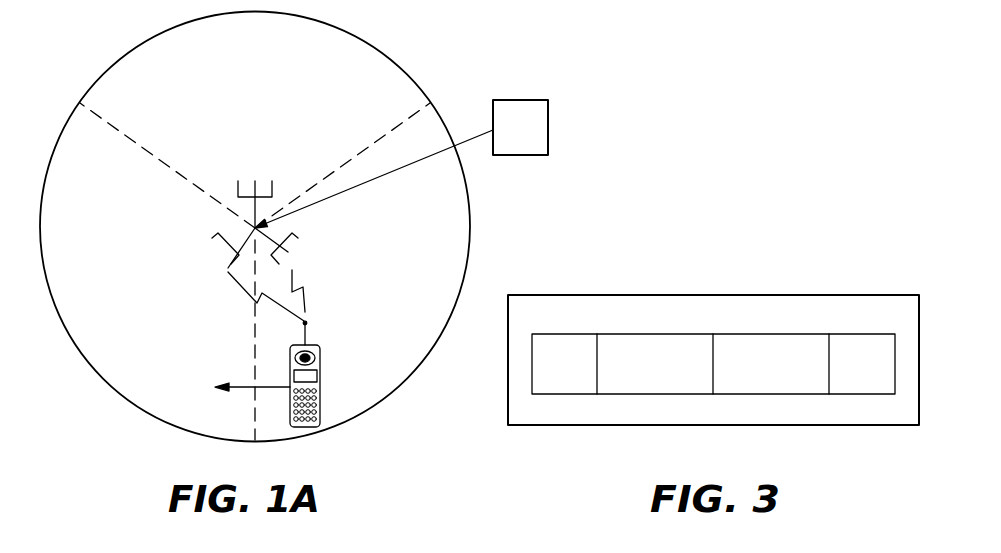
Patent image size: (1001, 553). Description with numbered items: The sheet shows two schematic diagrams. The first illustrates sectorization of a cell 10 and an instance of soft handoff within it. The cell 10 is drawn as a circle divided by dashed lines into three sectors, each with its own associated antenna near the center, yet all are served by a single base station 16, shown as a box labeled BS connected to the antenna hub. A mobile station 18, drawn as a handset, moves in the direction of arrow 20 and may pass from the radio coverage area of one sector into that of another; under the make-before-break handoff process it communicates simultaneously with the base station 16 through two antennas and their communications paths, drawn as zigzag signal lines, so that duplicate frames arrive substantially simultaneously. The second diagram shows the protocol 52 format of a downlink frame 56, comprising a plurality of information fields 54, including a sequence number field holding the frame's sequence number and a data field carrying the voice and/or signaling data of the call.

In FIG. 1A, the cell 10 is at (387, 53).
In FIG. 1A, the base station 16 is at (518, 100).
In FIG. 1A, the mobile station 18 is at (320, 373).
In FIG. 1A, the arrow 20 is at (248, 388).
In FIG. 3, the protocol 52 is at (769, 312).
In FIG. 3, the information fields 54 is at (550, 385).
In FIG. 3, the frame 56 is at (577, 295).